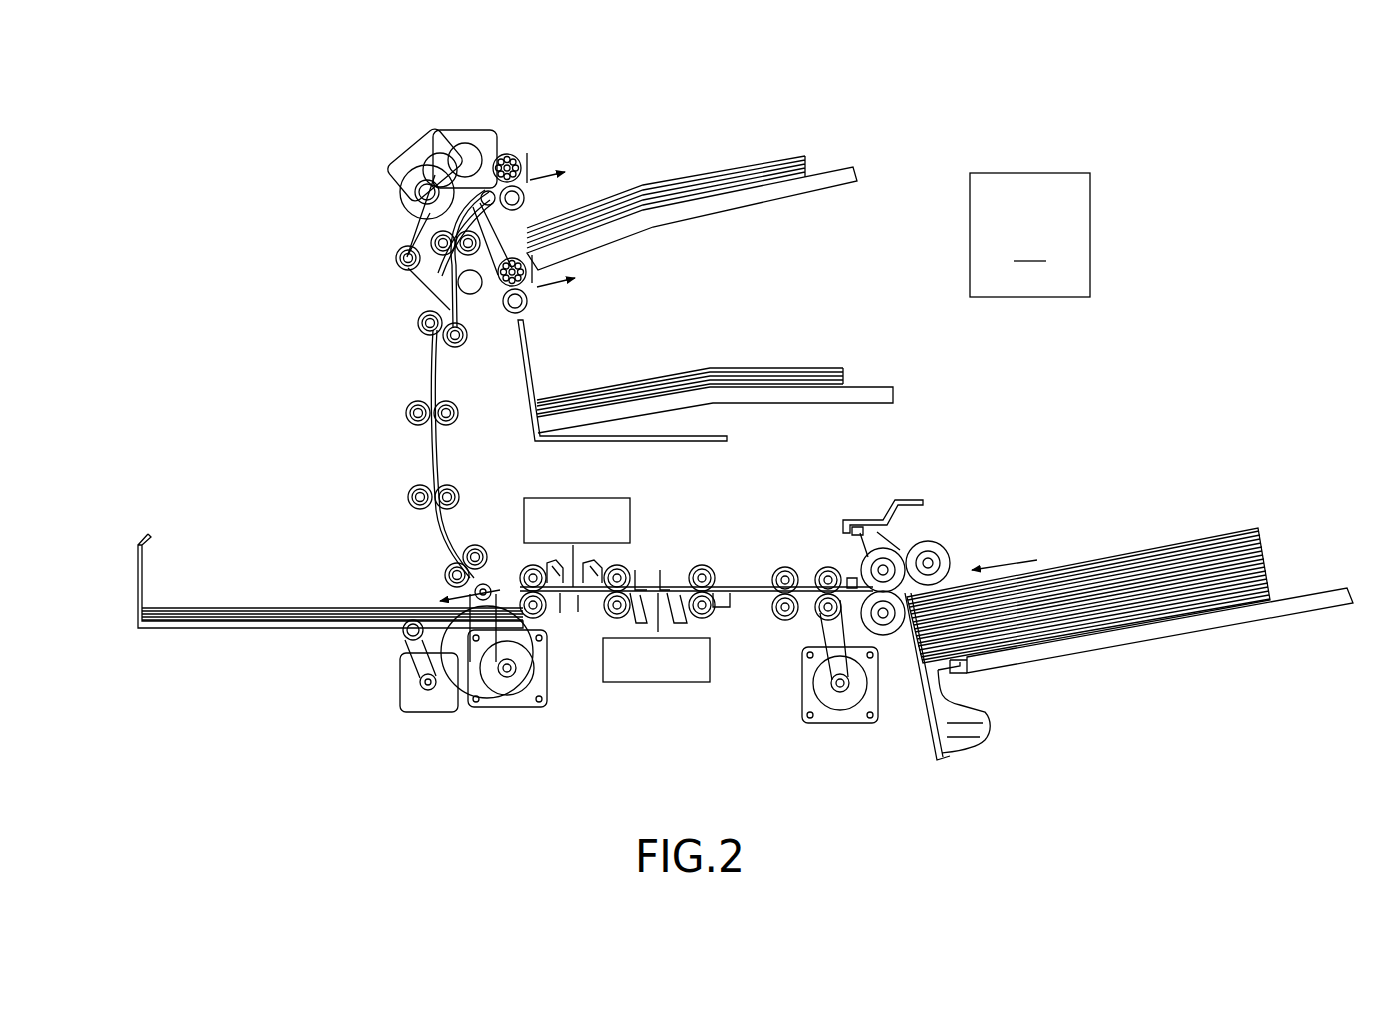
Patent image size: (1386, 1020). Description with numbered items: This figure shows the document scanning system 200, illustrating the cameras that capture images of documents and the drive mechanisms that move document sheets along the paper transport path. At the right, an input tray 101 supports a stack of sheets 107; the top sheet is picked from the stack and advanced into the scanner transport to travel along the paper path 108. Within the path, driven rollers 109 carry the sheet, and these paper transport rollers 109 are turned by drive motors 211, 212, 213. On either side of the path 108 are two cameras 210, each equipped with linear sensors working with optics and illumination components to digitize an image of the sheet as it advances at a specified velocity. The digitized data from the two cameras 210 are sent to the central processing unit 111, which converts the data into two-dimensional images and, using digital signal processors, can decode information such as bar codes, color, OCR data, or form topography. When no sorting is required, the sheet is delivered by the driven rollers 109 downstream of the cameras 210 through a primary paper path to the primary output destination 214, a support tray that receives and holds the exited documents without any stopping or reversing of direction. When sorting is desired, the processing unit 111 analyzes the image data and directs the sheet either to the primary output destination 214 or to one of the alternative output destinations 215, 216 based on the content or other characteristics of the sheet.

The document scanning system 200 is at (298, 147).
The drive motor 213 is at (425, 142).
The alternative output destination 216 is at (790, 200).
The primary output destination 214 is at (890, 395).
The central processing unit 111 is at (1030, 235).
The driven rollers 109 is at (418, 330).
The cameras 210 is at (630, 508).
The paper path 108 is at (688, 555).
The stack of sheets 107 is at (1250, 558).
The input tray 101 is at (1292, 606).
The alternative output destination 215 is at (156, 630).
The drive motor 212 is at (512, 710).
The drive motor 211 is at (843, 723).